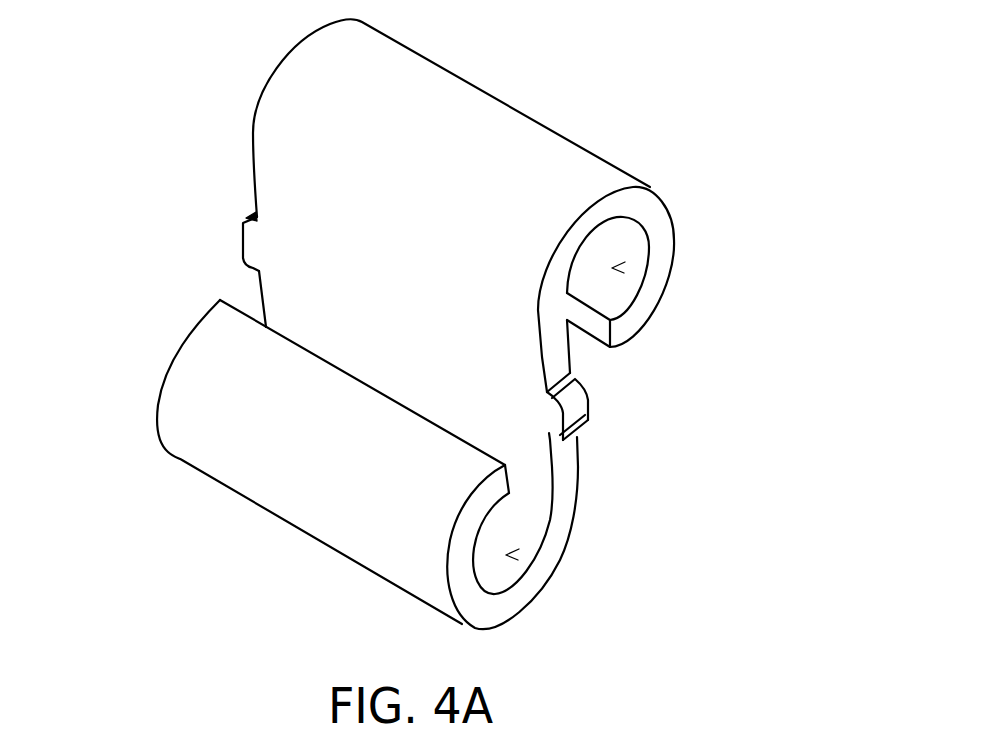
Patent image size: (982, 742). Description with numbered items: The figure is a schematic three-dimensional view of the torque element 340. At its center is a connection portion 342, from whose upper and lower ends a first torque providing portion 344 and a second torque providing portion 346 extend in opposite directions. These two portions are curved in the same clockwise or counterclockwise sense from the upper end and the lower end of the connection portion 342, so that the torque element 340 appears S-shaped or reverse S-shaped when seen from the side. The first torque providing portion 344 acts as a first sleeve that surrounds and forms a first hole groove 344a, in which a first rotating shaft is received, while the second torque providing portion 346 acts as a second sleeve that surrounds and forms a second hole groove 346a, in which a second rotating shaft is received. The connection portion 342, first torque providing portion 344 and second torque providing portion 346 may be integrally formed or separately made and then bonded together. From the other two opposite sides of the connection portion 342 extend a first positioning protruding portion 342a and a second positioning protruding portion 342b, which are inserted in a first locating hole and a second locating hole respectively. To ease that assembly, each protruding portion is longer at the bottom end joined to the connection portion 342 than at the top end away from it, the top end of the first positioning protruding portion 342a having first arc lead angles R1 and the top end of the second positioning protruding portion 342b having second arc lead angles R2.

The torque element 340 is at (259, 45).
The connection portion 342 is at (480, 385).
The first positioning protruding portion 342a is at (250, 240).
The second positioning protruding portion 342b is at (550, 413).
The first torque providing portion 344 is at (632, 197).
The first hole groove 344a is at (613, 268).
The second torque providing portion 346 is at (200, 412).
The second hole groove 346a is at (507, 555).
The first arc lead angles R1 is at (250, 213).
The second arc lead angles R2 is at (575, 390).